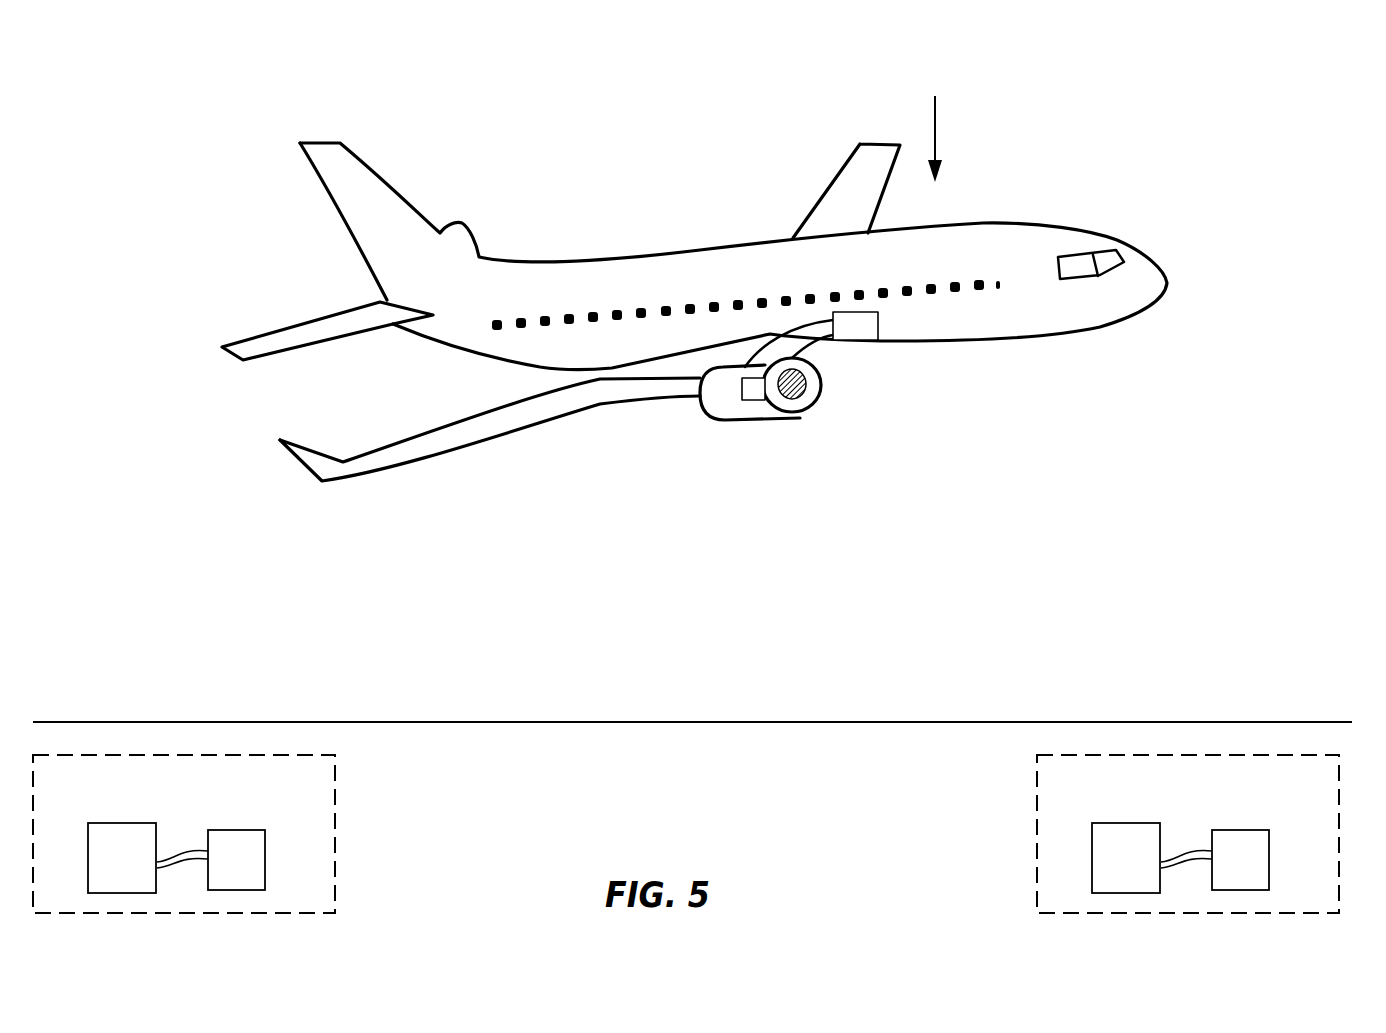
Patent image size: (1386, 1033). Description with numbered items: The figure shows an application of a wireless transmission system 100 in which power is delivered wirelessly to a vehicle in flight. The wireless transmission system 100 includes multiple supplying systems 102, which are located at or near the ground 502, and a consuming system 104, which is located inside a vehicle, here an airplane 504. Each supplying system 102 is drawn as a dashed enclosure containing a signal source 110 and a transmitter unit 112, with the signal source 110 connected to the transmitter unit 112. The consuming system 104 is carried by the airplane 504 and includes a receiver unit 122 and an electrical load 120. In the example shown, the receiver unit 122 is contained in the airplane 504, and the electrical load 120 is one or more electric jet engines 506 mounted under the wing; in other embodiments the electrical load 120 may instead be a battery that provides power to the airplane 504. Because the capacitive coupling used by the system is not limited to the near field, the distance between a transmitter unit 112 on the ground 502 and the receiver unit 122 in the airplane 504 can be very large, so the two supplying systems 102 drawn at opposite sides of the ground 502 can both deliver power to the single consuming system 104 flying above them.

The wireless transmission system 100 is at (211, 139).
The supplying system 102 is at (317, 787).
The consuming system 104 is at (929, 125).
The signal source 110 is at (108, 823).
The transmitter unit 112 is at (234, 830).
The electrical load 120 is at (765, 399).
The receiver unit 122 is at (860, 341).
The ground 502 is at (855, 723).
The airplane 504 is at (989, 224).
The electric jet engine 506 is at (728, 421).